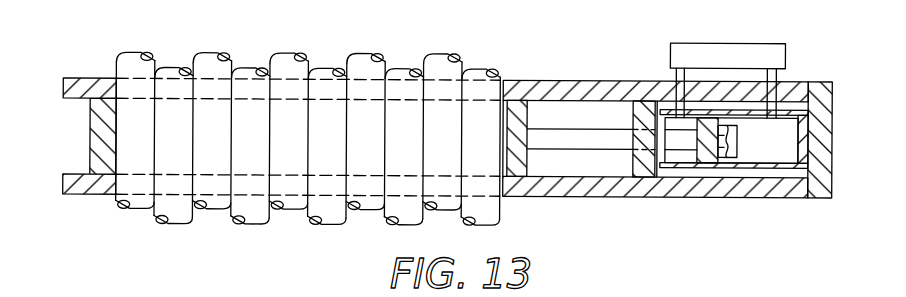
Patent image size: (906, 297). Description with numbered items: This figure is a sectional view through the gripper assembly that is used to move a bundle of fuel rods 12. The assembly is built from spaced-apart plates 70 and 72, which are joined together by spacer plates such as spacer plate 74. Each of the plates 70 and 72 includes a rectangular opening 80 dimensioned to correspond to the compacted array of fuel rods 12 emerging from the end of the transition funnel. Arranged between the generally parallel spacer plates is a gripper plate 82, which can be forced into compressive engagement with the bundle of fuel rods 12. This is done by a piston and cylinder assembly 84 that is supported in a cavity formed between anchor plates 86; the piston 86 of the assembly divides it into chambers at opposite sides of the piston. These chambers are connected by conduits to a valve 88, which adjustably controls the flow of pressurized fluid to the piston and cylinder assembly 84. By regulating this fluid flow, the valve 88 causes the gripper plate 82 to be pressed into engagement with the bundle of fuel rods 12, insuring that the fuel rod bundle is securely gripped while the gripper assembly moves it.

The fuel rods 12 is at (268, 66).
The plate 70 is at (550, 80).
The plate 72 is at (610, 197).
The spacer plate 74 is at (90, 139).
The rectangular opening 80 is at (528, 173).
The gripper plate 82 is at (743, 167).
The piston and cylinder assembly 84 is at (832, 120).
The anchor plates 86 is at (632, 160).
The valve 88 is at (730, 42).